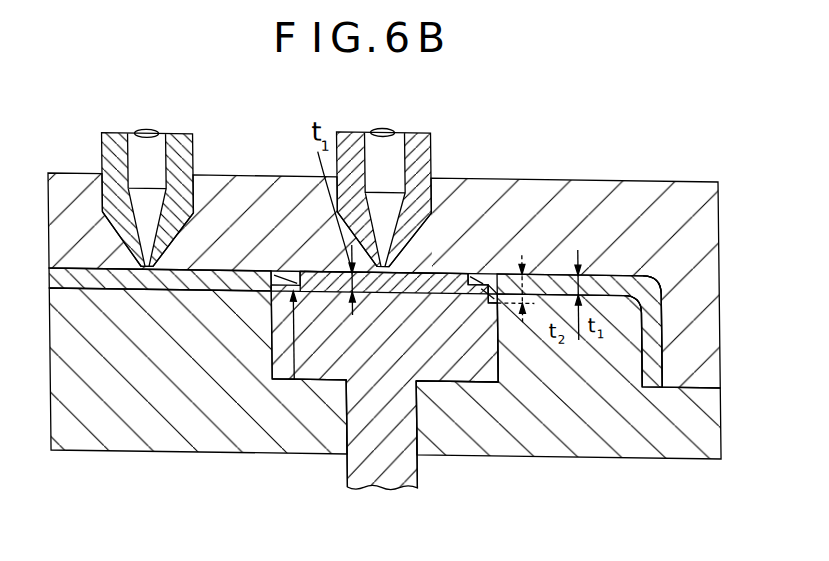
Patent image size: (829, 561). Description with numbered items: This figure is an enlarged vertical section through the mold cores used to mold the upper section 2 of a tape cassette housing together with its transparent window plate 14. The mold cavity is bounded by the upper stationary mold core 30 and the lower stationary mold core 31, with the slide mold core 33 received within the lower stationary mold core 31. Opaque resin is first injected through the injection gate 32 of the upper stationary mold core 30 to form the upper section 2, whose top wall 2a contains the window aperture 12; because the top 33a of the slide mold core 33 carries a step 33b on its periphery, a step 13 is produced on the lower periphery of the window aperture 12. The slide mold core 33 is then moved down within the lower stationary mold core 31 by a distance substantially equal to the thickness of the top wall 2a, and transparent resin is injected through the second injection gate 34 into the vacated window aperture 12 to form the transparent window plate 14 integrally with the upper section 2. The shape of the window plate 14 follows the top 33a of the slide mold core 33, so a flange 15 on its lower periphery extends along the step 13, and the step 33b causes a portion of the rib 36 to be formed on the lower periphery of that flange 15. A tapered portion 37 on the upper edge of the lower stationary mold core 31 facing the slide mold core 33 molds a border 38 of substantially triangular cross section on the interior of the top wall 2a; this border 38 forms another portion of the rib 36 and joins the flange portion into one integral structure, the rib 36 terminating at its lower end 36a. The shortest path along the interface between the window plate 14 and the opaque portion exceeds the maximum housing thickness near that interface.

The upper section 2 is at (619, 262).
The top wall 2a is at (591, 278).
The window aperture 12 is at (478, 282).
The step 13 is at (486, 292).
The transparent window plate 14 is at (312, 267).
The flange 15 is at (278, 279).
The upper stationary mold core 30 is at (570, 208).
The lower stationary mold core 31 is at (180, 428).
The injection gate 32 is at (159, 261).
The slide mold core 33 is at (343, 374).
The top of slide mold core 33a is at (469, 276).
The step of slide mold core 33b is at (282, 297).
The second injection gate 34 is at (395, 257).
The rib 36 is at (294, 317).
The lower end of rib 36a is at (498, 314).
The tapered portion 37 is at (498, 304).
The border 38 is at (497, 299).